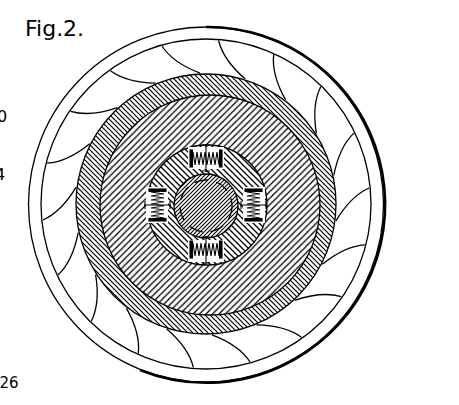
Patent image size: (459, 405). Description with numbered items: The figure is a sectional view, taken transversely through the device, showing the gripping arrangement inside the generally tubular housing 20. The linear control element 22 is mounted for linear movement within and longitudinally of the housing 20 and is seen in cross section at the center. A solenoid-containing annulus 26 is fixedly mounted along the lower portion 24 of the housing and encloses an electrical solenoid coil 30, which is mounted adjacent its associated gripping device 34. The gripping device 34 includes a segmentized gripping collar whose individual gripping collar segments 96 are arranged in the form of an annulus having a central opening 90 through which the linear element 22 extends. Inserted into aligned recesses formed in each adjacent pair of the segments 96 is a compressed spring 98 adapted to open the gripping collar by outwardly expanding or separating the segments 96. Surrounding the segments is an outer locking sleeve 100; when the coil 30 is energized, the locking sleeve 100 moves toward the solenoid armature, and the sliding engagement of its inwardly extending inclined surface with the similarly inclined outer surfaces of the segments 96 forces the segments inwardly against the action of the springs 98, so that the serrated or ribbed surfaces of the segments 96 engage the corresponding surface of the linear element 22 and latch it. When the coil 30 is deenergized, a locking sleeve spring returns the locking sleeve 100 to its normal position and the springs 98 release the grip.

The tubular housing 20 is at (345, 60).
The linear control element 22 is at (197, 184).
The lower portion of the housing 24 is at (315, 152).
The solenoid-containing annulus 26 is at (317, 344).
The electrical solenoid coil 30 is at (150, 350).
The gripping device 34 is at (285, 128).
The central opening 90 is at (245, 240).
The gripping collar segment 96 is at (250, 191).
The compressed spring 98 is at (216, 262).
The outer locking sleeve 100 is at (305, 228).